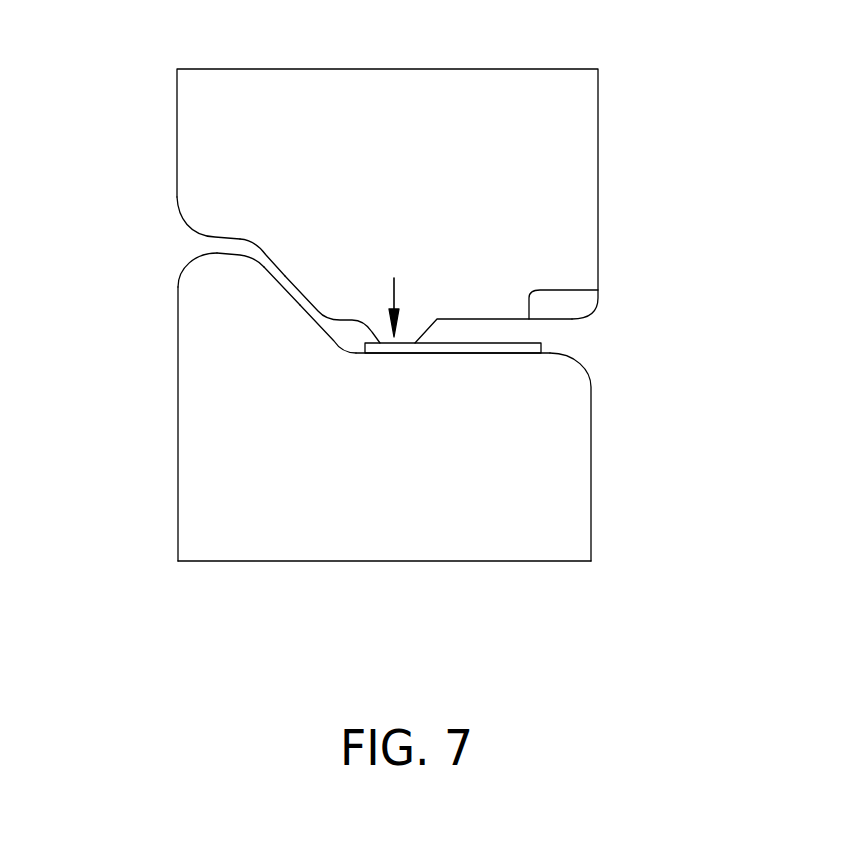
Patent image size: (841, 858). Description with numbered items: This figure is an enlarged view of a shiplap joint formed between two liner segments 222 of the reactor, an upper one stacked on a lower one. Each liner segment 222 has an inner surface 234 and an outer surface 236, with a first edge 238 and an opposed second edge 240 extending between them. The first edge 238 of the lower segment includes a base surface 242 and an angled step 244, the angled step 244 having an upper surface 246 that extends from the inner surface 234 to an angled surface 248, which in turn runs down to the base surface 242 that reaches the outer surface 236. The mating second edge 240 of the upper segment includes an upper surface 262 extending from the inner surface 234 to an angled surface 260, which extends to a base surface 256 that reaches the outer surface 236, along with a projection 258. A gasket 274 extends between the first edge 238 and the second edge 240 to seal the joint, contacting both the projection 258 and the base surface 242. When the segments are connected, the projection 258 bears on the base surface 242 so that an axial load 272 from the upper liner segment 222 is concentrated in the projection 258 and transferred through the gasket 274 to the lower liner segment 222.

The liner segment 222 is at (217, 102).
The upper surface 262 is at (217, 237).
The angled surface 260 is at (273, 265).
The second edge 240 is at (303, 292).
The axial load 272 is at (395, 294).
The base surface 256 is at (598, 290).
The projection 258 is at (420, 327).
The base surface 242 is at (550, 353).
The gasket 274 is at (500, 354).
The outer surface 236 is at (591, 502).
The inner surface 234 is at (177, 518).
The angled step 244 is at (232, 303).
The upper surface 246 is at (215, 254).
The angled surface 248 is at (300, 312).
The first edge 238 is at (330, 342).